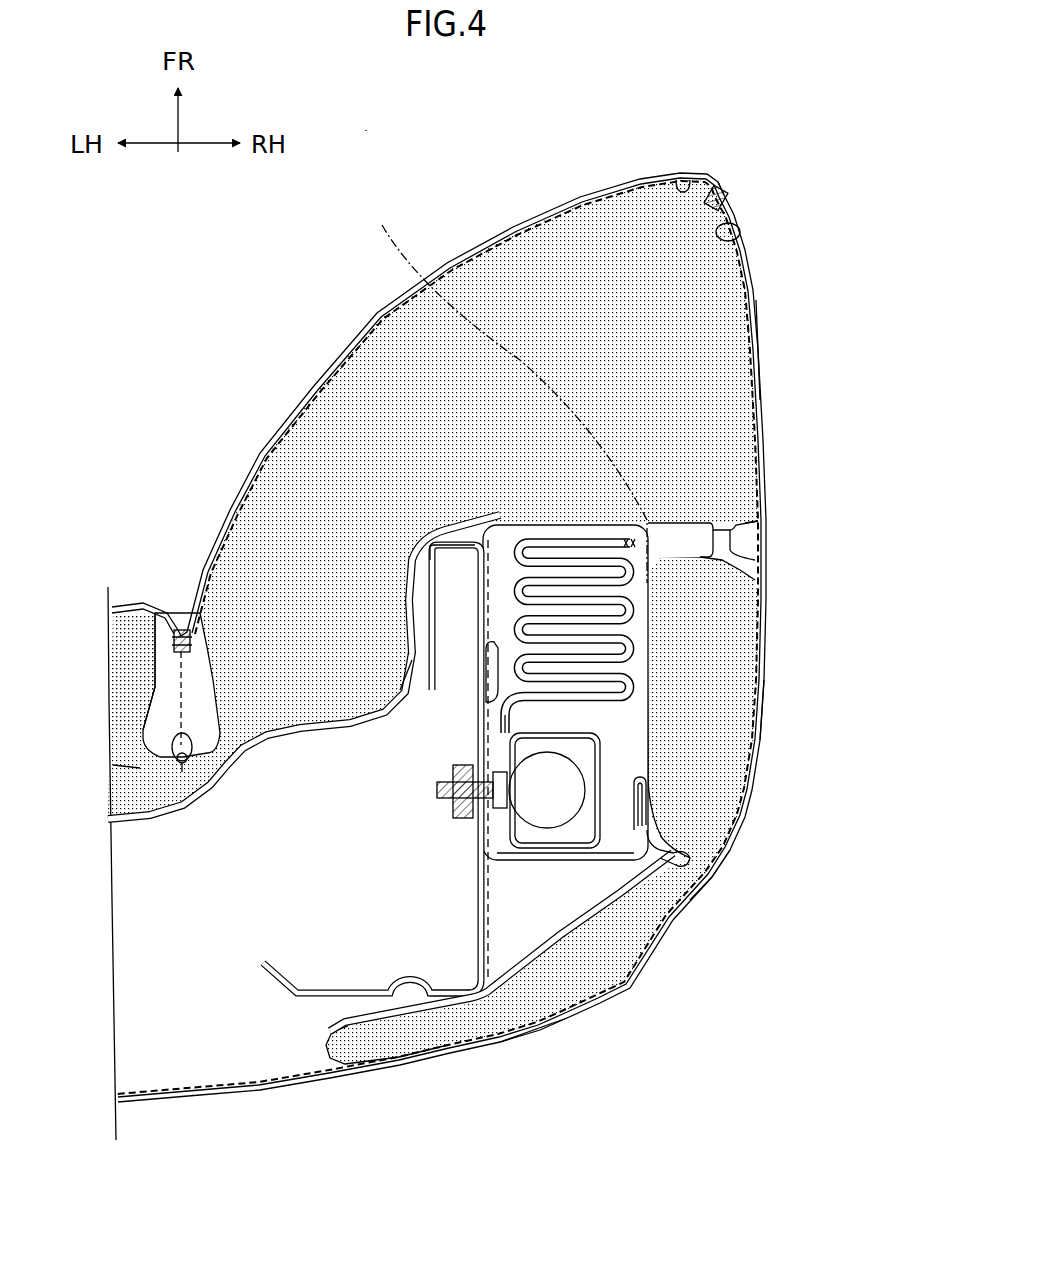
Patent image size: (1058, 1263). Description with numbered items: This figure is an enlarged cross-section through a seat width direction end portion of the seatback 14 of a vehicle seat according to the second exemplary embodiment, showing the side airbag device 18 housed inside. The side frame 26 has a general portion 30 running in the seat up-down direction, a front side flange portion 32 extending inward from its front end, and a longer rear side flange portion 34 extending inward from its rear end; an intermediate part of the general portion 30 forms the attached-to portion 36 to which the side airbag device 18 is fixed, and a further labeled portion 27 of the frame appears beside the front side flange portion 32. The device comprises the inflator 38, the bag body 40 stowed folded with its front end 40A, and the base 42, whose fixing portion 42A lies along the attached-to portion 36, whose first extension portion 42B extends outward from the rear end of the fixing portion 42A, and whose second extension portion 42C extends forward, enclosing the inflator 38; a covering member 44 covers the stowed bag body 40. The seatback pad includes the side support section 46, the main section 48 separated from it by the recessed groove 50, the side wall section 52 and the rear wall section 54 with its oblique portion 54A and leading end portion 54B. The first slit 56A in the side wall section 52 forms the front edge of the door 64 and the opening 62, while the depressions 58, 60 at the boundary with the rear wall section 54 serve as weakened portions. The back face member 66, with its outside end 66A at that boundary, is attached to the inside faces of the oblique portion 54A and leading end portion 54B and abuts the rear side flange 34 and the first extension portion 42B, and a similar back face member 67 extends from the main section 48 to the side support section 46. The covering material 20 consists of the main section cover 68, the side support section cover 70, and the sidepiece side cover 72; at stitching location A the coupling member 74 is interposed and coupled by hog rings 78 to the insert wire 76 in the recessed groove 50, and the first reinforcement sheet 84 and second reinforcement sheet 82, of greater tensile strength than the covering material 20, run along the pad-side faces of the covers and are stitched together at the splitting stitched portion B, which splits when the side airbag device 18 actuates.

The seatback 14 is at (366, 130).
The side airbag device 18 is at (556, 872).
The covering material 20 is at (442, 262).
The side frame 26 is at (468, 912).
The bracket flange 27 is at (437, 592).
The general portion 30 is at (470, 852).
The front side flange portion 32 is at (447, 552).
The rear side flange portion 34 is at (312, 990).
The attached-to portion 36 is at (490, 712).
The inflator 38 is at (445, 785).
The bag body 40 is at (547, 532).
The front end of the bag body 40A is at (612, 536).
The base (case) 42 is at (520, 870).
The fixing portion 42A is at (407, 730).
The first extension portion 42B is at (583, 863).
The second extension portion 42C is at (633, 790).
The covering member 44 is at (504, 387).
The side support section 46 is at (655, 210).
The main section 48 is at (135, 637).
The recessed groove 50 is at (160, 712).
The side wall section 52 is at (748, 640).
The rear wall section 54 is at (596, 993).
The oblique portion 54A is at (636, 960).
The leading end portion 54B is at (421, 1050).
The first slit 56A is at (740, 545).
The depression 58 is at (725, 858).
The depression 60 is at (705, 880).
The opening 62 is at (764, 520).
The door 64 is at (763, 704).
The back face member 66 is at (515, 952).
The end of the back face member 66A is at (690, 848).
The back face member 67 is at (310, 740).
The main section cover 68 is at (133, 630).
The side support section cover 70 is at (586, 192).
The sidepiece side cover 72 is at (763, 330).
The coupling member (suspension cloth) 74 is at (180, 680).
The insert wire 76 is at (184, 766).
The hog ring 78 is at (171, 742).
The second reinforcement sheet 82 is at (740, 235).
The first reinforcement sheet 84 is at (705, 190).
The stitching location A is at (181, 628).
The splitting stitched portion B is at (727, 195).